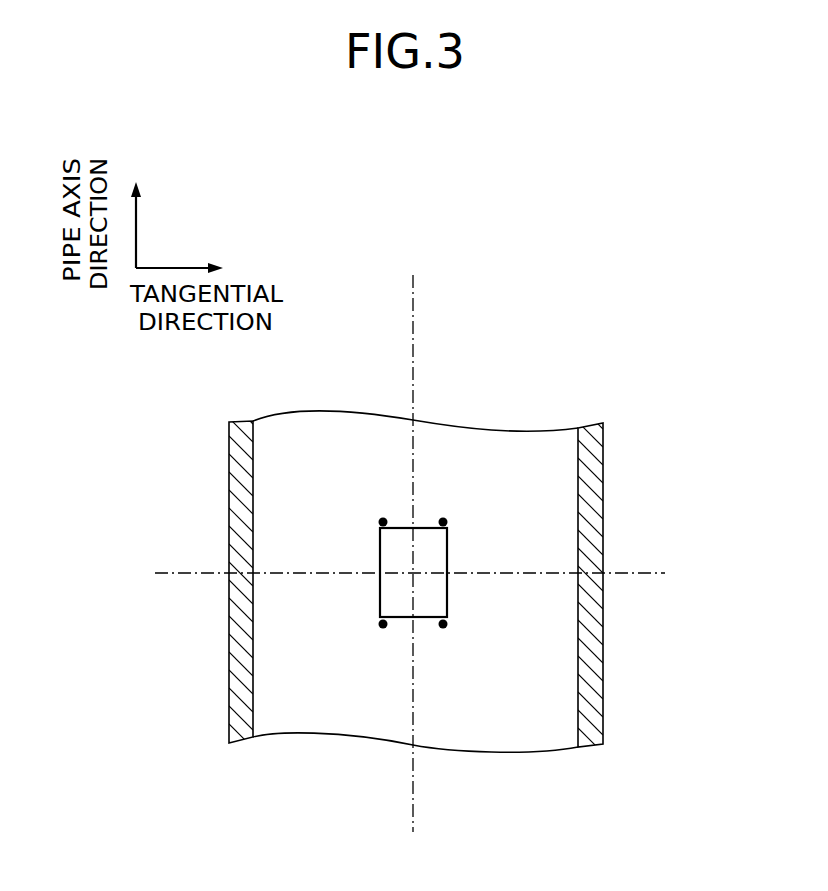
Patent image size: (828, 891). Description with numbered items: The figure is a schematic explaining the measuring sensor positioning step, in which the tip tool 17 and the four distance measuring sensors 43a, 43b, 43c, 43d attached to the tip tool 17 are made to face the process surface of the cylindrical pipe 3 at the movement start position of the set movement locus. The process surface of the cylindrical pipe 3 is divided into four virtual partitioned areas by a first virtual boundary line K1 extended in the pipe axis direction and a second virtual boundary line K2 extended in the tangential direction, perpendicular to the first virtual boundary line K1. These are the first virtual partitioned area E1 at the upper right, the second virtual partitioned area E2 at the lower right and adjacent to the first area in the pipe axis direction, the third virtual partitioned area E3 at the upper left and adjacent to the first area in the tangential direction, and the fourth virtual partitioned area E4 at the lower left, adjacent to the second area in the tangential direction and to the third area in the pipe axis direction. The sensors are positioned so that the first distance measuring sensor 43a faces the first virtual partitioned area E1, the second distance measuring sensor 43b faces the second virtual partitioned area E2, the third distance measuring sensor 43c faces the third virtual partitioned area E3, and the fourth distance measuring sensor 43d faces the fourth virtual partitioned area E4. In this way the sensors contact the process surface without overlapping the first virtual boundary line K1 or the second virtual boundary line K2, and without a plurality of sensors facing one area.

The cylindrical pipe 3 is at (603, 510).
The tip tool 17 is at (447, 550).
The first distance measuring sensor 43a is at (443, 522).
The second distance measuring sensor 43b is at (443, 624).
The third distance measuring sensor 43c is at (383, 522).
The fourth distance measuring sensor 43d is at (383, 624).
The first virtual boundary line K1 is at (413, 322).
The second virtual boundary line K2 is at (645, 573).
The first virtual partitioned area E1 is at (523, 445).
The second virtual partitioned area E2 is at (530, 718).
The third virtual partitioned area E3 is at (302, 447).
The fourth virtual partitioned area E4 is at (310, 717).